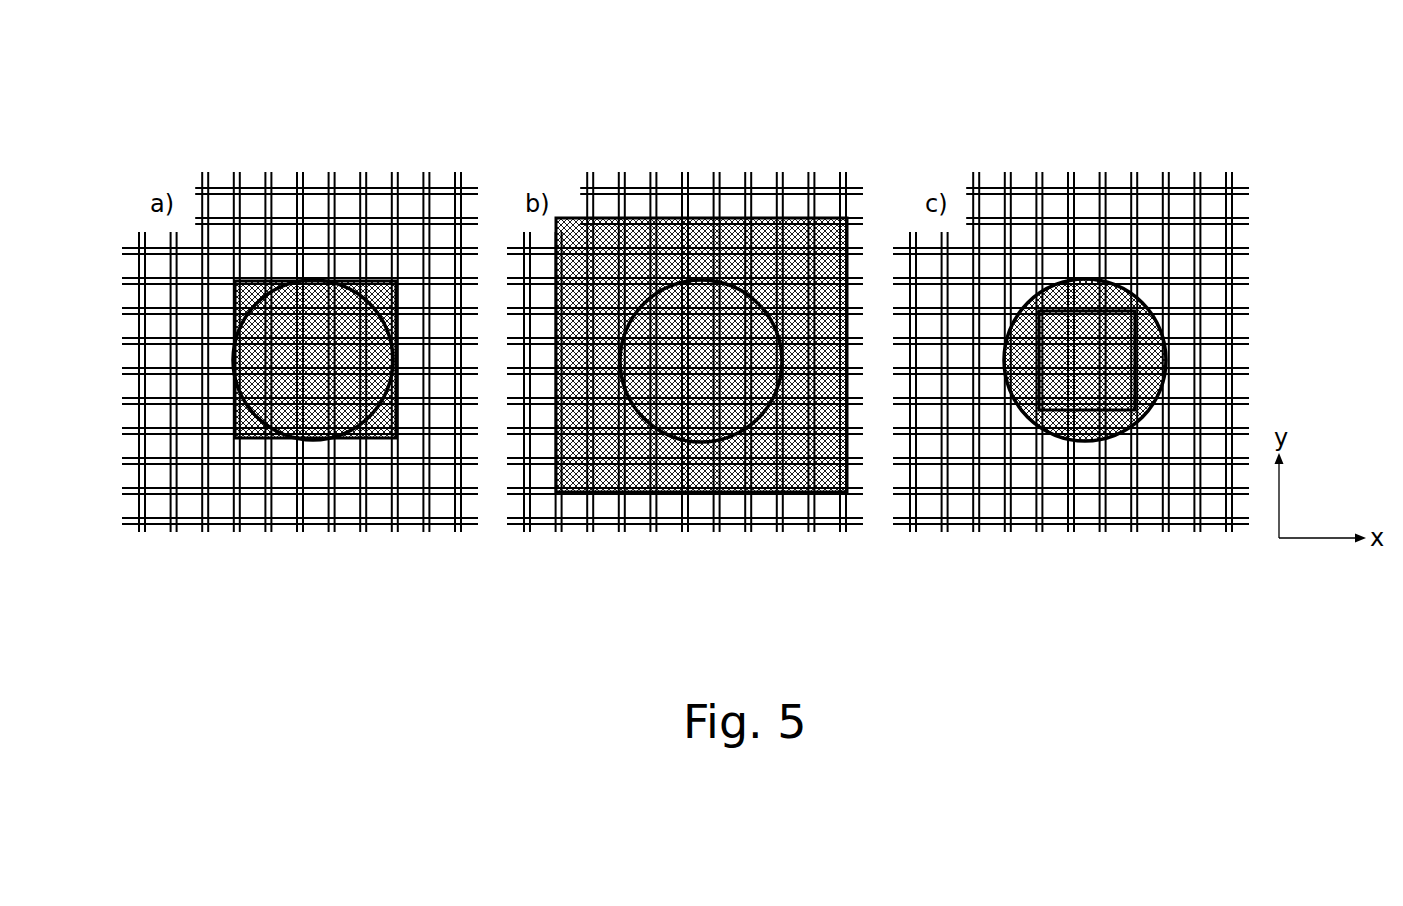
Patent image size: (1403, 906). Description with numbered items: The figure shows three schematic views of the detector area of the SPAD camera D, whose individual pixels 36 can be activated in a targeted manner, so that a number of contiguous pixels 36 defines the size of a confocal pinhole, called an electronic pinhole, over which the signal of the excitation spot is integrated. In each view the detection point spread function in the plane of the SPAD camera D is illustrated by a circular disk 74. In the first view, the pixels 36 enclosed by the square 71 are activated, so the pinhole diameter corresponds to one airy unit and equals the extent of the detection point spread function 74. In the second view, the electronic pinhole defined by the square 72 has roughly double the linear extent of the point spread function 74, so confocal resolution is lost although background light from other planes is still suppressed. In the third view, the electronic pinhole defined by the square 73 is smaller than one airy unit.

The SPAD camera D is at (685, 300).
The pixels 36 is at (348, 207).
The square 71 is at (368, 440).
The square 72 is at (762, 494).
The square 73 is at (1117, 412).
The circular disk 74 is at (290, 412).